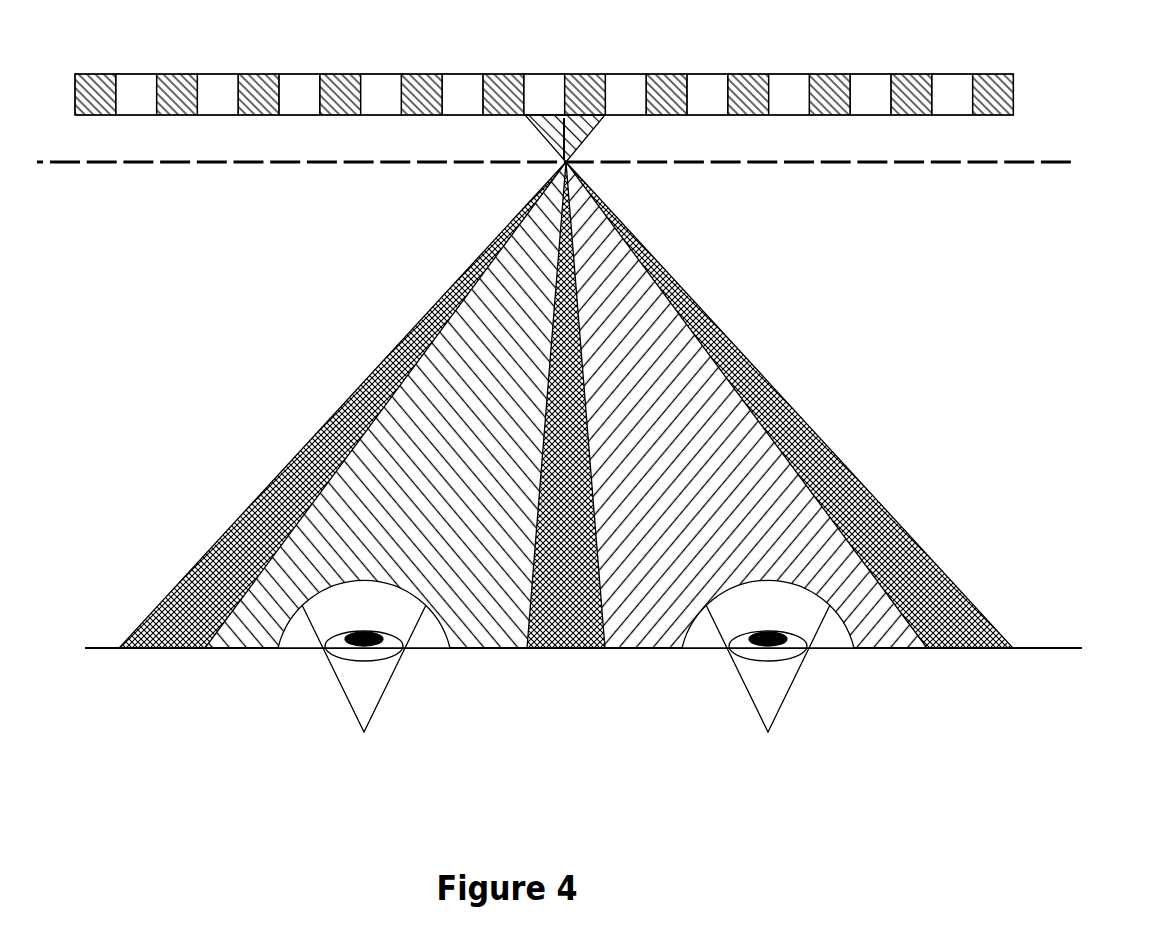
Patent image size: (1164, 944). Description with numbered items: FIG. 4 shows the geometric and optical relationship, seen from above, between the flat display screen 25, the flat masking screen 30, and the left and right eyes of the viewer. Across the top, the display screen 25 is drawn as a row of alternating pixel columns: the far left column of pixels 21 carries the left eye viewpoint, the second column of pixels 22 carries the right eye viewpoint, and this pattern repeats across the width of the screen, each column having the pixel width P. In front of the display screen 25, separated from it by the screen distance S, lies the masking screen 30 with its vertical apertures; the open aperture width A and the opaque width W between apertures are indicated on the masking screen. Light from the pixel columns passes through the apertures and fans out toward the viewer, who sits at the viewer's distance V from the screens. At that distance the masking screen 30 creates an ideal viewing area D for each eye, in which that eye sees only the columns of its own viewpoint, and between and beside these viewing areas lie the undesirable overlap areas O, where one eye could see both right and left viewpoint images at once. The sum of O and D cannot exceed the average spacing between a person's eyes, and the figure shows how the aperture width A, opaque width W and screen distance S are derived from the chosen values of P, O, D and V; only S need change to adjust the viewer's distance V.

The far left column of pixels 21 is at (99, 72).
The second column of pixels 22 is at (220, 78).
The display screen 25 is at (339, 70).
The masking screen 30 is at (880, 178).
The pixel P is at (485, 74).
The screen distance S is at (1022, 113).
The aperture width A is at (119, 166).
The opaque width W is at (271, 166).
The viewer's distance from the screens V is at (1077, 162).
The overlap area O is at (205, 652).
The desired viewing area D is at (507, 715).